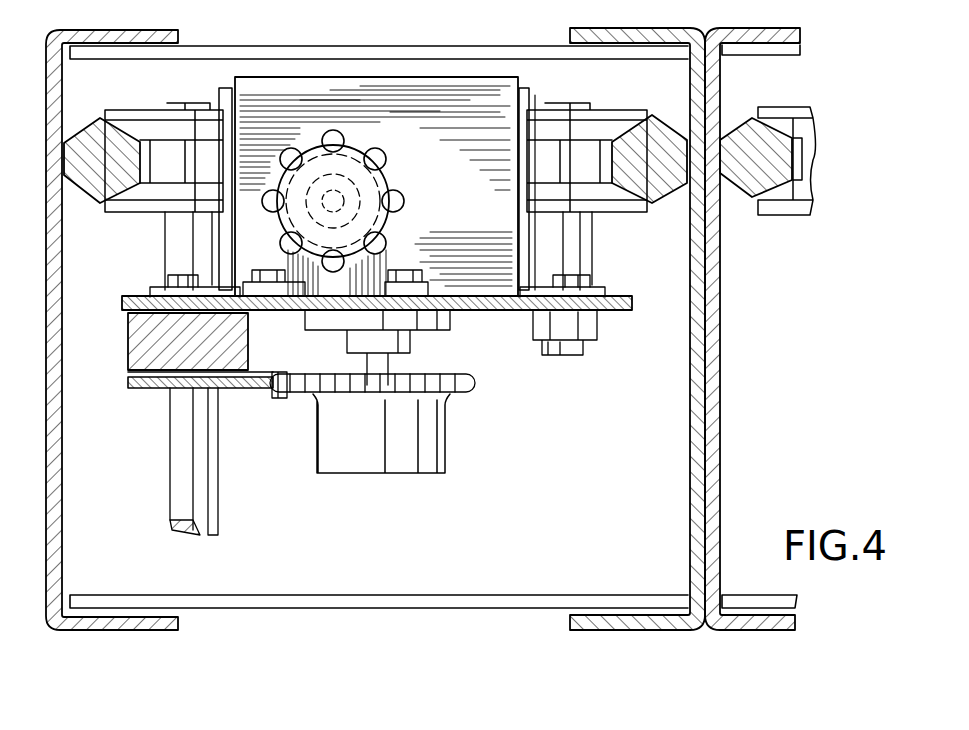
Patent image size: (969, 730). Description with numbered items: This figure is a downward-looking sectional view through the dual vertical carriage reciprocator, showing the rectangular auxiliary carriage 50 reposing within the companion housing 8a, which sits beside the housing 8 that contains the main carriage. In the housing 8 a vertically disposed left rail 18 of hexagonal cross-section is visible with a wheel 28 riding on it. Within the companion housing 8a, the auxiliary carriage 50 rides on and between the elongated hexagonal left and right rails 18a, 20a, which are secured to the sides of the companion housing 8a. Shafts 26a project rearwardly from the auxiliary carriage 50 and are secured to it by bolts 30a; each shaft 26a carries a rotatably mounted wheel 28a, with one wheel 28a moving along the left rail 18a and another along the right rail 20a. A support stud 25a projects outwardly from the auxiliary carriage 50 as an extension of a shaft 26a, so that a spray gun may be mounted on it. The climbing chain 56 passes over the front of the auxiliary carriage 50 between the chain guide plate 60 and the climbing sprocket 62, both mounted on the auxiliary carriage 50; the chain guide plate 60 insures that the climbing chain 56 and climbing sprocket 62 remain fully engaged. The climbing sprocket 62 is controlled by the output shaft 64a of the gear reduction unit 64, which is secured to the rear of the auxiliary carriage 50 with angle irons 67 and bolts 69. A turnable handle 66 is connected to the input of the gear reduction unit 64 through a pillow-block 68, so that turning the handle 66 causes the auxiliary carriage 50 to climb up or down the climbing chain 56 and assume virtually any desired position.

The housing 8 is at (738, 30).
The companion housing 8a is at (284, 45).
The left rail 18 is at (735, 128).
The left rail 18a is at (90, 138).
The right rail 20a is at (665, 140).
The wheel 28 is at (785, 110).
The wheel 28a is at (148, 130).
The shaft 26a is at (165, 243).
The bolt 69 is at (168, 280).
The angle iron 67 is at (228, 216).
The gear reduction unit 64 is at (376, 186).
The turnable handle 66 is at (298, 224).
The pillow-block 68 is at (402, 286).
The auxiliary carriage 50 is at (630, 302).
The chain guide plate 60 is at (128, 386).
The support stud 25a is at (170, 463).
The output shaft 64a is at (385, 362).
The climbing chain 56 is at (285, 396).
The climbing sprocket 62 is at (418, 440).
The bolt 30a is at (588, 328).